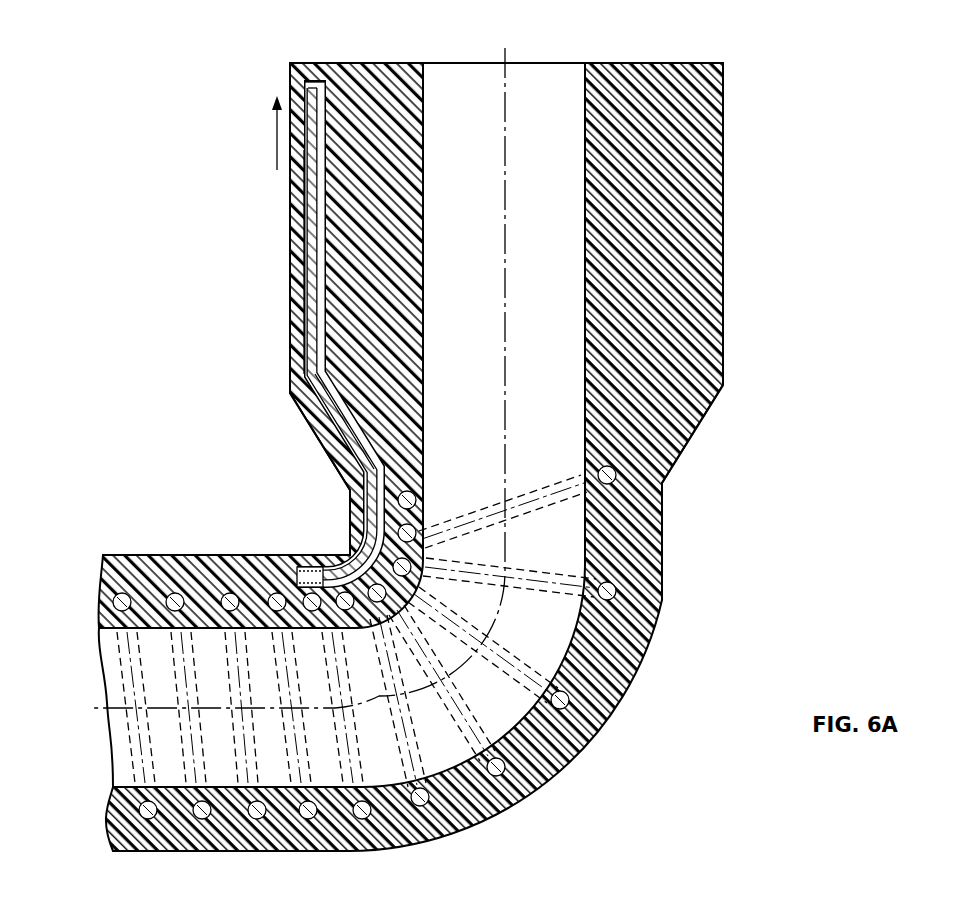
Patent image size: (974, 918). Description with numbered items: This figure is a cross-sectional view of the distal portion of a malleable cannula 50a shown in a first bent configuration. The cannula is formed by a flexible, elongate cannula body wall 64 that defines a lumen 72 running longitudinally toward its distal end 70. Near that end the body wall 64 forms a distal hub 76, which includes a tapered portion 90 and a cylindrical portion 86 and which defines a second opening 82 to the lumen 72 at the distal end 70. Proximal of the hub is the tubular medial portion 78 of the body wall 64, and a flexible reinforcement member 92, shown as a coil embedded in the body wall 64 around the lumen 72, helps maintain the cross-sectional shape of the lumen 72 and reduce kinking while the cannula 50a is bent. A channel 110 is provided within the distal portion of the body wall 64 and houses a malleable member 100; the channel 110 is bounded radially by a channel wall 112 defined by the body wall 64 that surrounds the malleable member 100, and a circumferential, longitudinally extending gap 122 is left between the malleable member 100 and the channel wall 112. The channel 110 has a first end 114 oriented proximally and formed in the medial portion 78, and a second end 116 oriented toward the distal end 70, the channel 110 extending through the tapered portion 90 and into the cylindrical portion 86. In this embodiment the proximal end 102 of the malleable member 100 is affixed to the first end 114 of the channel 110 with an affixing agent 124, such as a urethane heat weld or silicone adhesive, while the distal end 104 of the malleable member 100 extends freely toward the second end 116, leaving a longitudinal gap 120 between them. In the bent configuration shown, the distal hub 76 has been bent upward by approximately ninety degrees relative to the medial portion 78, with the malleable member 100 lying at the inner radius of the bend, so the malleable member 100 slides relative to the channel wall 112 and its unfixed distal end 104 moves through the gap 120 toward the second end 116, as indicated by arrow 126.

The malleable cannula 50a is at (93, 215).
The cannula body wall 64 is at (116, 548).
The distal end 70 is at (725, 72).
The lumen 72 is at (299, 378).
The distal hub 76 is at (284, 296).
The tubular medial portion 78 is at (166, 553).
The second opening 82 is at (543, 63).
The cylindrical portion 86 is at (724, 255).
The tapered portion 90 is at (693, 432).
The flexible reinforcement member 92 is at (228, 592).
The malleable member 100 is at (305, 336).
The proximal end 102 is at (306, 577).
The distal end 104 is at (315, 96).
The channel 110 is at (337, 413).
The channel wall 112 is at (327, 223).
The first end 114 is at (297, 571).
The second end 116 is at (327, 87).
The longitudinal gap 120 is at (313, 82).
The longitudinally extending gap 122 is at (306, 186).
The affixing agent 124 is at (321, 567).
The arrow 126 is at (276, 130).